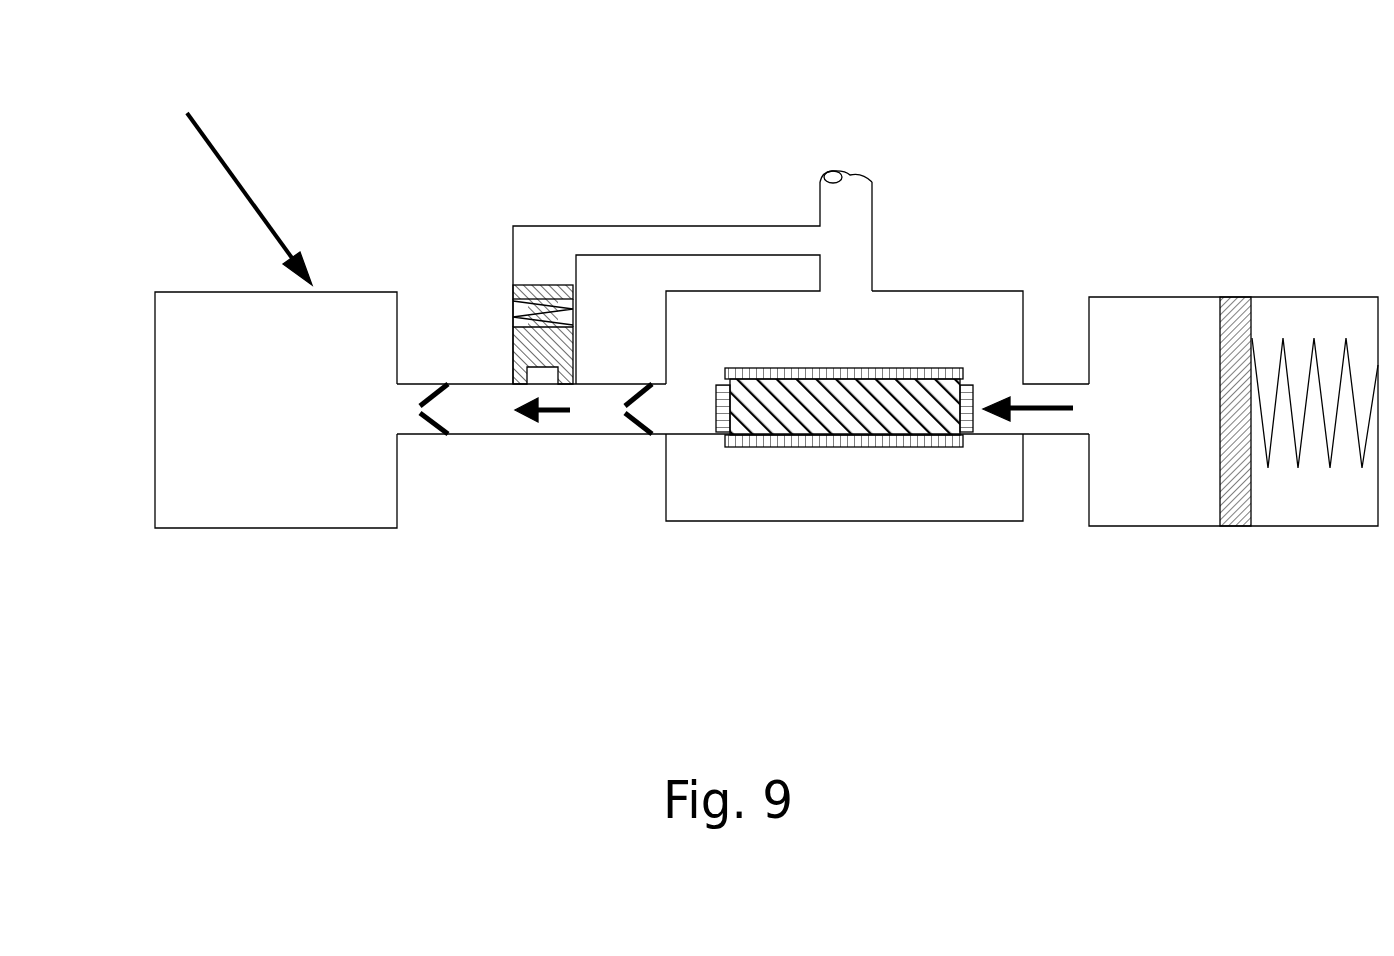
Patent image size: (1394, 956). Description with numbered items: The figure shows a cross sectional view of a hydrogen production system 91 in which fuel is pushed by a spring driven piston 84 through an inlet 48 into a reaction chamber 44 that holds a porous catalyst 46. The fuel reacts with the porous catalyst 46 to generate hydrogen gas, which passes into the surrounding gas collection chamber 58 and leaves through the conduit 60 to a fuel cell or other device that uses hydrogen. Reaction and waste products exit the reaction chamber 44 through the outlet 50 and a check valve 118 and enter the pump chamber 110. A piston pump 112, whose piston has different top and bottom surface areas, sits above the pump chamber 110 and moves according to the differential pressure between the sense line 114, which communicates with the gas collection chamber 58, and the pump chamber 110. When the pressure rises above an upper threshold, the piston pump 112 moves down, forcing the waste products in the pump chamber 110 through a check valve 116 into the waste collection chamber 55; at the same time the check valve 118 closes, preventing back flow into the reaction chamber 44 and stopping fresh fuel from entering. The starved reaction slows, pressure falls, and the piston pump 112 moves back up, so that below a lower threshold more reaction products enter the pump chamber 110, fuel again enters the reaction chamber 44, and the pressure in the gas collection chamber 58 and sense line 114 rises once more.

The hydrogen production system 91 is at (219, 171).
The waste collection chamber 55 is at (284, 418).
The pump chamber 110 is at (488, 392).
The piston pump 112 is at (513, 284).
The sense line 114 is at (685, 225).
The check valve 116 is at (440, 433).
The check valve 118 is at (638, 433).
The outlet 50 is at (670, 413).
The gas collection chamber 58 is at (862, 342).
The conduit 60 is at (872, 197).
The reaction chamber 44 is at (903, 437).
The porous catalyst 46 is at (822, 405).
The inlet 48 is at (1058, 382).
The spring driven piston 84 is at (1233, 297).